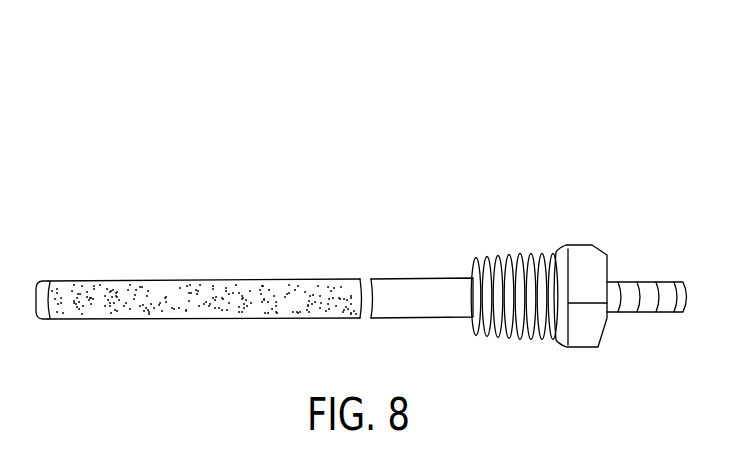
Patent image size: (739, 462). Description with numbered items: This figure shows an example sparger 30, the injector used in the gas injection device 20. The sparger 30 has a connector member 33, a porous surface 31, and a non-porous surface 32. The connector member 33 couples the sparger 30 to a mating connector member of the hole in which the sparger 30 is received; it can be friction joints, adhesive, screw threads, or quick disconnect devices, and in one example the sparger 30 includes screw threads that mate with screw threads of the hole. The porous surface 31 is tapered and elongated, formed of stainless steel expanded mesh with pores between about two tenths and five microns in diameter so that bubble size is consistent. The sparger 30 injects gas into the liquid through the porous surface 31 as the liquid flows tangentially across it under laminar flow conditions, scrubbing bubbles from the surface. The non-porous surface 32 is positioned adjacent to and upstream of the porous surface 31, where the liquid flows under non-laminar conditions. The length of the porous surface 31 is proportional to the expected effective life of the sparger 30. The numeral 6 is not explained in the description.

The flow control device 6 is at (389, 72).
The gas injection device 20 is at (469, 108).
The sparger 30 is at (481, 194).
The porous surface 31 is at (187, 286).
The non-porous surface 32 is at (424, 290).
The connector member 33 is at (525, 338).